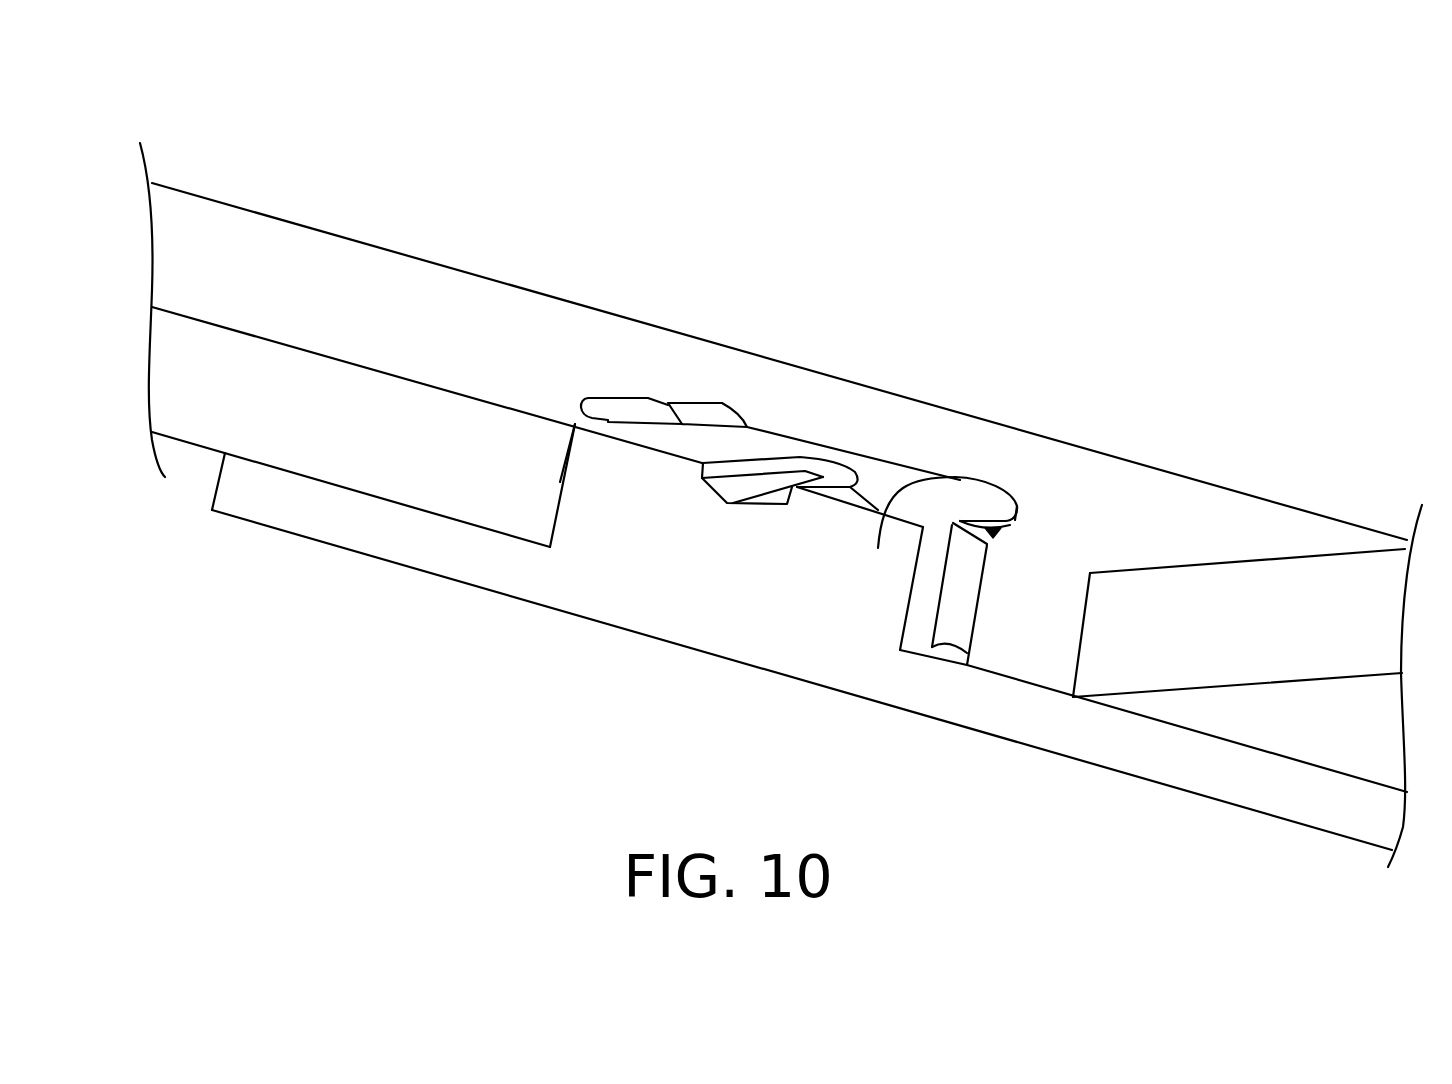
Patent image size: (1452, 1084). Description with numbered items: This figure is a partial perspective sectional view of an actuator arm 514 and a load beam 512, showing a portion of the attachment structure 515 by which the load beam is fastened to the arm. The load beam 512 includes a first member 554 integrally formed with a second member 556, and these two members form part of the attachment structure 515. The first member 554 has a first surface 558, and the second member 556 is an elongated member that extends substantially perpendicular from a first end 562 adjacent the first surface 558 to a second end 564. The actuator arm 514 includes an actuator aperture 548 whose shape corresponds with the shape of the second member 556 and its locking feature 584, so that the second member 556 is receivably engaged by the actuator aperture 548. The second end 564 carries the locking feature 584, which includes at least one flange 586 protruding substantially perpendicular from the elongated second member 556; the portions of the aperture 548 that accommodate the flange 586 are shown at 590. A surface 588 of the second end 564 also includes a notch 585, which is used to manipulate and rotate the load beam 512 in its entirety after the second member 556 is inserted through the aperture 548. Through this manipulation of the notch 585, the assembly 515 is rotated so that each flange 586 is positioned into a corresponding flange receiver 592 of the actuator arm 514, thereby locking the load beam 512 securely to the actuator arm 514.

The load beam 512 is at (1178, 730).
The actuator arm 514 is at (327, 273).
The attachment structure 515 is at (887, 432).
The actuator aperture 548 is at (560, 482).
The first member 554 is at (838, 662).
The second member 556 is at (983, 495).
The first surface 558 is at (362, 493).
The first end 562 is at (553, 530).
The second end 564 is at (752, 445).
The locking feature 584 is at (1016, 499).
The notch 585 is at (803, 470).
The flange 586 is at (633, 413).
The surface 588 is at (840, 457).
The portions of aperture accommodating flange 590 is at (710, 400).
The flange receiver 592 is at (1000, 533).